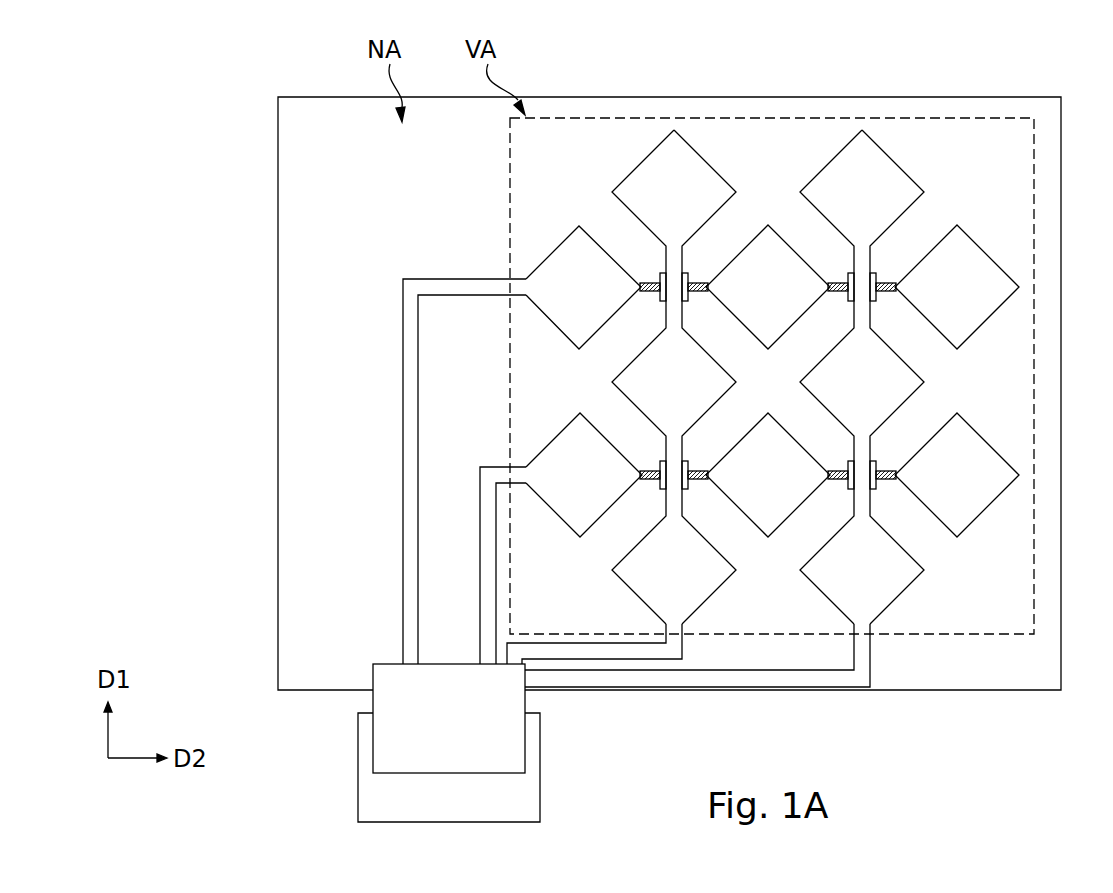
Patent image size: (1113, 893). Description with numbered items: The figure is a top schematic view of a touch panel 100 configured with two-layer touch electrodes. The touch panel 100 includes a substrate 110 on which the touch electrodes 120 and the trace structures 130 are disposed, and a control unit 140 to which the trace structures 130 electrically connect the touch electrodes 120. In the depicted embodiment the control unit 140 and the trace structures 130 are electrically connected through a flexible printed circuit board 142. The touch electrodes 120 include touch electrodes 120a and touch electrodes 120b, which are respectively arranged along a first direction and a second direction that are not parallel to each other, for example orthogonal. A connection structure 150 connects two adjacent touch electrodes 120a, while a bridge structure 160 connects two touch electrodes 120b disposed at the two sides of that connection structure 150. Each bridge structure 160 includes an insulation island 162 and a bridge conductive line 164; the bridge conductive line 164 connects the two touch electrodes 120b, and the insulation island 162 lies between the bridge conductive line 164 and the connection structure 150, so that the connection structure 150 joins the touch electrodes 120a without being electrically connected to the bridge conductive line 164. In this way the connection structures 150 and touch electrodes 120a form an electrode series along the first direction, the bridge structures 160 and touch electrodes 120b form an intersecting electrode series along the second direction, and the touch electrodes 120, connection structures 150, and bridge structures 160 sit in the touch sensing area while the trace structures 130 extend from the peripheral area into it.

The touch panel 100 is at (170, 36).
The substrate 110 is at (988, 97).
The touch electrode 120 is at (702, 62).
The touch electrodes 120a is at (673, 147).
The touch electrodes 120b is at (570, 250).
The trace structure 130 is at (410, 372).
The control unit 140 is at (520, 792).
The flexible printed circuit board 142 is at (520, 745).
The connection structure 150 is at (678, 262).
The bridge structure 160 is at (877, 65).
The insulation island 162 is at (688, 273).
The bridge conductive line 164 is at (707, 287).